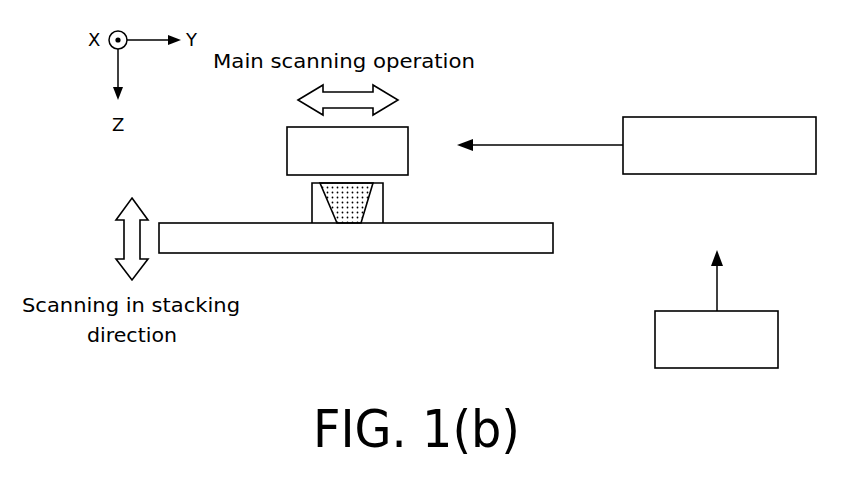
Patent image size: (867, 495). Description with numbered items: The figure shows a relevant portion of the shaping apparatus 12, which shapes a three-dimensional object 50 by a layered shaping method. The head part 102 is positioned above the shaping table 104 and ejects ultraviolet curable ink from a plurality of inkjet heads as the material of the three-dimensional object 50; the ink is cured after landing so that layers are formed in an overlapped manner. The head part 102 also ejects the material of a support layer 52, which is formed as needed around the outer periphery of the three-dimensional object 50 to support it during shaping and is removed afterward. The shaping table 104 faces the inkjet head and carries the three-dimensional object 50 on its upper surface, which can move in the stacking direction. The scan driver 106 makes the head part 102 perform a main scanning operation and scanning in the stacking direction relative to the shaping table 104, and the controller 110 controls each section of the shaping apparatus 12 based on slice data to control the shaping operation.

The shaping apparatus 12 is at (753, 19).
The three-dimensional object 50 is at (354, 215).
The support layer 52 is at (383, 208).
The head part 102 is at (287, 148).
The shaping table 104 is at (300, 239).
The scan driver 106 is at (659, 125).
The controller 110 is at (655, 342).